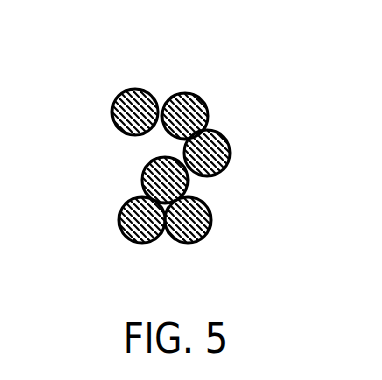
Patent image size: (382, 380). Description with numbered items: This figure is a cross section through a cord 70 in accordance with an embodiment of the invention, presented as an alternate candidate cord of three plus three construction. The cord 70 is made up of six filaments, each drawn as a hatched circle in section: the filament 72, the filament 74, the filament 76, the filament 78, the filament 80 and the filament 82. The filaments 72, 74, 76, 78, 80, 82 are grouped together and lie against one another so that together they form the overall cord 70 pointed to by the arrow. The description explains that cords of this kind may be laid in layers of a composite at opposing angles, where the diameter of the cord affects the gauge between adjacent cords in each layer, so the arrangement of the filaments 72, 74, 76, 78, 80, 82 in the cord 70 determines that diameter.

The cord 70 is at (254, 78).
The filament 72 is at (133, 97).
The filament 74 is at (189, 104).
The filament 76 is at (222, 137).
The filament 78 is at (207, 228).
The filament 80 is at (128, 235).
The filament 82 is at (152, 168).